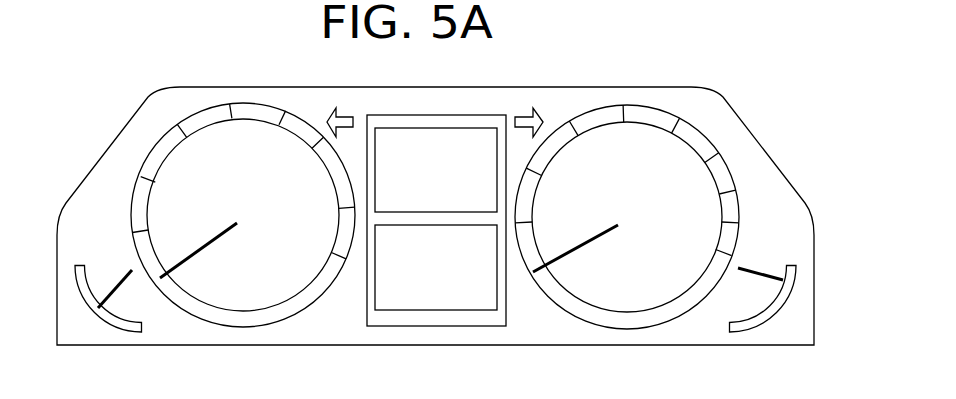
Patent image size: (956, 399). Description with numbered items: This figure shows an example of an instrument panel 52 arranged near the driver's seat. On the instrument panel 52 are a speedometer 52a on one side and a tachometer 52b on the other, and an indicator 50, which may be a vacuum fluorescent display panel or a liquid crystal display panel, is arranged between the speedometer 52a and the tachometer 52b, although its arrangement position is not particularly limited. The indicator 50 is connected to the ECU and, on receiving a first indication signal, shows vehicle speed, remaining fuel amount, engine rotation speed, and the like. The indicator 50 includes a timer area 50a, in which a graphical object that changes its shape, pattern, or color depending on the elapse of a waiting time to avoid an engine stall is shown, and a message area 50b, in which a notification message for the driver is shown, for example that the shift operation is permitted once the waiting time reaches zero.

The indicator 50 is at (432, 215).
The timer area 50a is at (448, 312).
The message area 50b is at (445, 128).
The instrument panel 52 is at (608, 357).
The speedometer 52a is at (720, 170).
The tachometer 52b is at (150, 168).